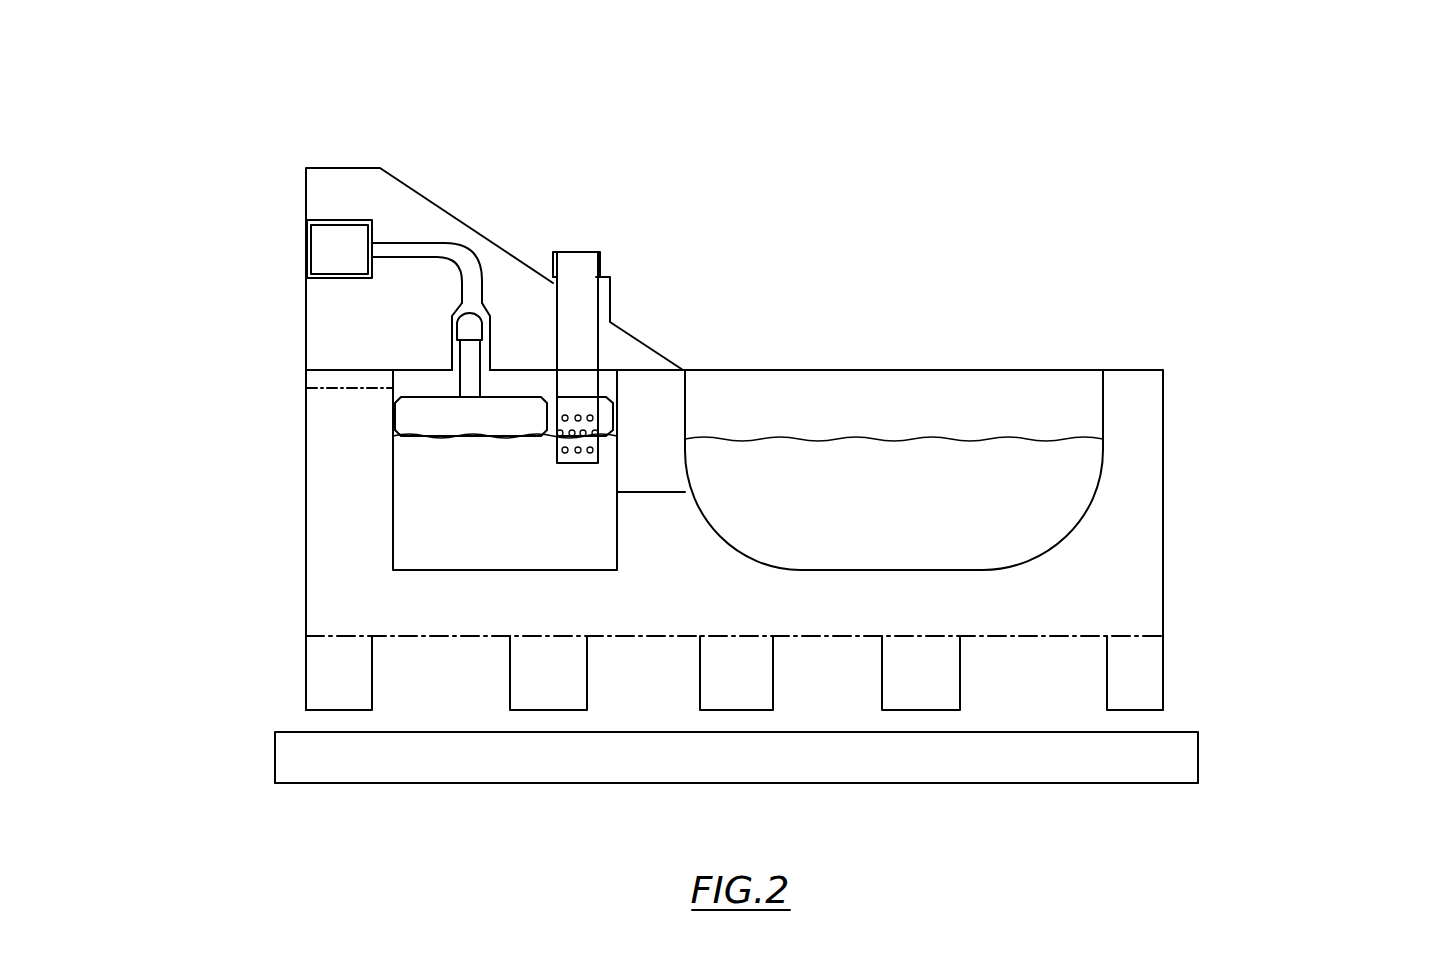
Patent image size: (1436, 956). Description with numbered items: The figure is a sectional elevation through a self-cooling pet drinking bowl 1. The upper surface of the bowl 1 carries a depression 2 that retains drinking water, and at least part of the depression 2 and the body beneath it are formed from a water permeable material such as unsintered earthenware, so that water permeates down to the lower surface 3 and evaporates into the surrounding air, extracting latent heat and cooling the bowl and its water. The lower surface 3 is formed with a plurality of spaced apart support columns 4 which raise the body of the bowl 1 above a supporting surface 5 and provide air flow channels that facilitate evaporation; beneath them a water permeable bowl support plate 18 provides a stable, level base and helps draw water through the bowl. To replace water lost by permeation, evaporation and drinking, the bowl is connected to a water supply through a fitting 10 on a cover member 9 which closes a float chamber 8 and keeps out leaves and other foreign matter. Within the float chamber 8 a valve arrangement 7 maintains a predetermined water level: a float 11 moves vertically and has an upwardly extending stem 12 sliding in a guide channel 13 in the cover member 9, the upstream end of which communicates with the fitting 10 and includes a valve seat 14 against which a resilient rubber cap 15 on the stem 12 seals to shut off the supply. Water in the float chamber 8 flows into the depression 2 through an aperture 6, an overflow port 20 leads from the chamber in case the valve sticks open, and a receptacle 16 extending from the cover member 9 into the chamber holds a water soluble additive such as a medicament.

The bowl 1 is at (1217, 330).
The depression 2 is at (885, 532).
The lower surface 3 is at (778, 670).
The support columns 4 is at (734, 673).
The supporting surface 5 is at (452, 733).
The aperture 6 is at (653, 428).
The valve arrangement 7 is at (503, 283).
The float chamber 8 is at (490, 532).
The cover member 9 is at (400, 172).
The fitting 10 is at (322, 244).
The float 11 is at (422, 423).
The stem 12 is at (453, 378).
The guide channel 13 is at (452, 350).
The valve seat 14 is at (486, 315).
The cap 15 is at (470, 322).
The receptacle 16 is at (570, 305).
The bowl support plate 18 is at (1070, 765).
The overflow port 20 is at (307, 388).